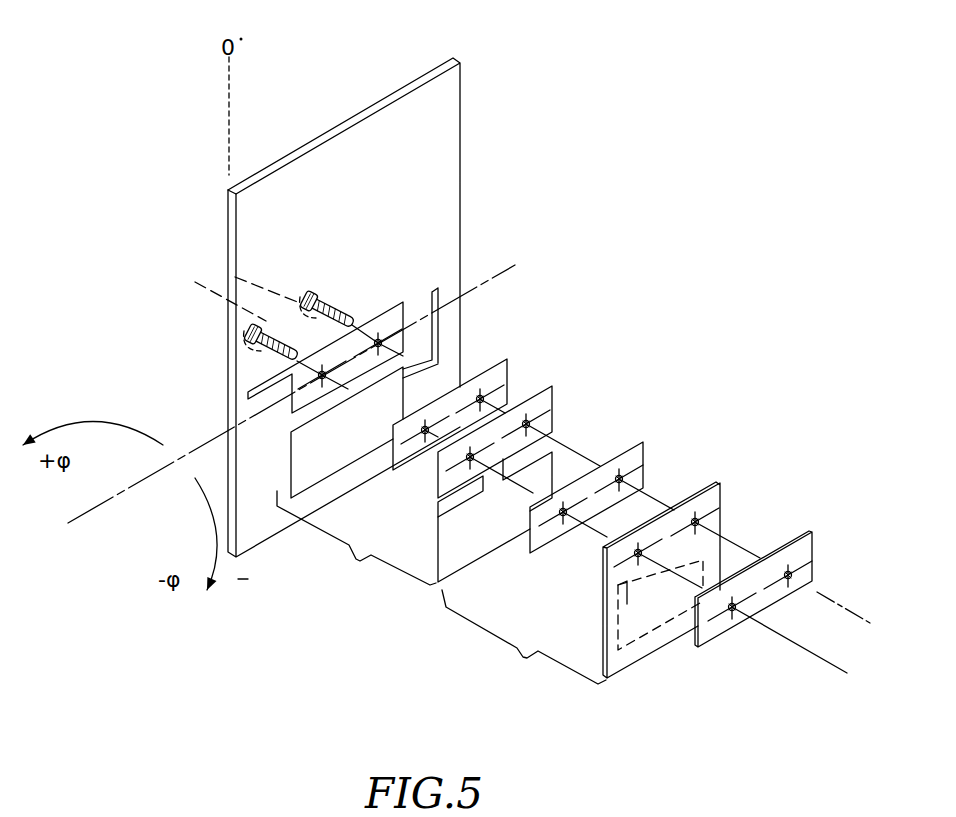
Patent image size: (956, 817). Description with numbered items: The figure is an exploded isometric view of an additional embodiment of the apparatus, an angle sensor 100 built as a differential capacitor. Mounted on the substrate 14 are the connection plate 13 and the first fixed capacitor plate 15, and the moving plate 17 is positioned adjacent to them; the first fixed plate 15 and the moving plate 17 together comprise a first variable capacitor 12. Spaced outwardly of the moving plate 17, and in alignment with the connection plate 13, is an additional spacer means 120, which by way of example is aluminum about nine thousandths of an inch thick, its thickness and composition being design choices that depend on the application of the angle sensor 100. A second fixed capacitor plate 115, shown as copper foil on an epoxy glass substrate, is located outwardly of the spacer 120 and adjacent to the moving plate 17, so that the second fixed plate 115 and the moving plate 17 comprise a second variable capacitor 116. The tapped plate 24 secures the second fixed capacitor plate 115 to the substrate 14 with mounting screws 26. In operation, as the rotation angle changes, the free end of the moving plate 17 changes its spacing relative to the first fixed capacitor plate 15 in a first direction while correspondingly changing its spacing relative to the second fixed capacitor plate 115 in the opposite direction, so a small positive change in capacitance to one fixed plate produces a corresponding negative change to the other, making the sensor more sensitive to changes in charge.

The angle sensor 100 is at (428, 72).
The substrate 14 is at (448, 187).
The mounting screws 26 is at (235, 277).
The connection plate 13 is at (396, 318).
The first fixed capacitor plate 15 is at (302, 471).
The first variable capacitor 12 is at (356, 543).
The spacer means 120 is at (505, 380).
The moving plate 17 is at (473, 549).
The second variable capacitor 116 is at (601, 588).
The second fixed capacitor plate 115 is at (640, 637).
The tapped plate 24 is at (793, 550).